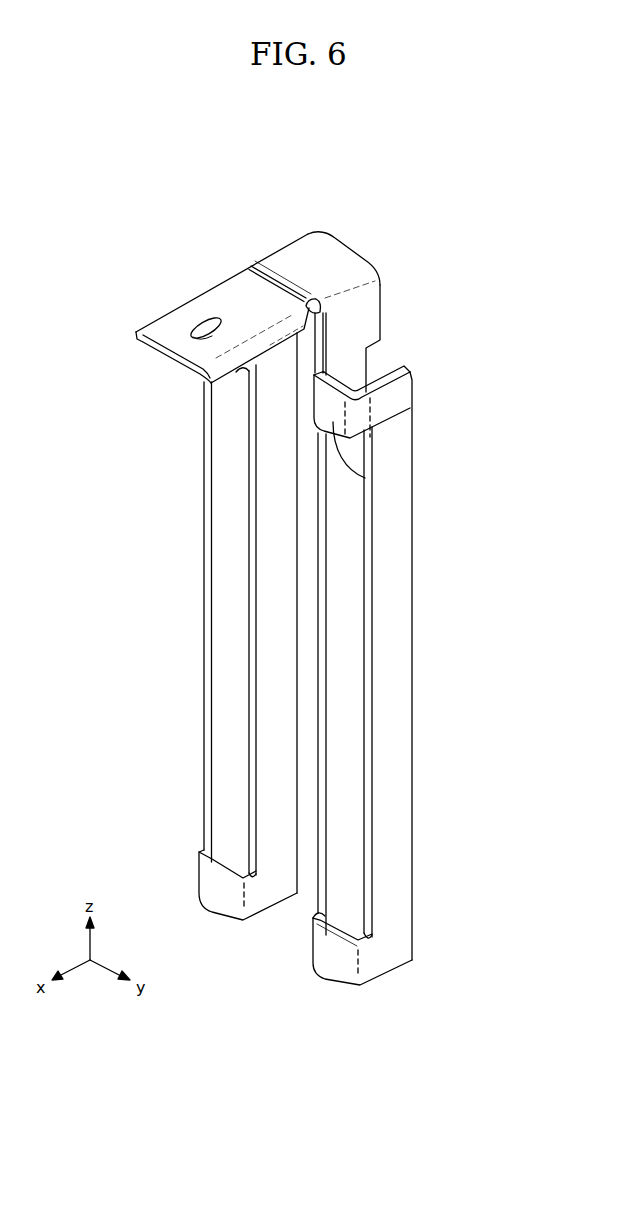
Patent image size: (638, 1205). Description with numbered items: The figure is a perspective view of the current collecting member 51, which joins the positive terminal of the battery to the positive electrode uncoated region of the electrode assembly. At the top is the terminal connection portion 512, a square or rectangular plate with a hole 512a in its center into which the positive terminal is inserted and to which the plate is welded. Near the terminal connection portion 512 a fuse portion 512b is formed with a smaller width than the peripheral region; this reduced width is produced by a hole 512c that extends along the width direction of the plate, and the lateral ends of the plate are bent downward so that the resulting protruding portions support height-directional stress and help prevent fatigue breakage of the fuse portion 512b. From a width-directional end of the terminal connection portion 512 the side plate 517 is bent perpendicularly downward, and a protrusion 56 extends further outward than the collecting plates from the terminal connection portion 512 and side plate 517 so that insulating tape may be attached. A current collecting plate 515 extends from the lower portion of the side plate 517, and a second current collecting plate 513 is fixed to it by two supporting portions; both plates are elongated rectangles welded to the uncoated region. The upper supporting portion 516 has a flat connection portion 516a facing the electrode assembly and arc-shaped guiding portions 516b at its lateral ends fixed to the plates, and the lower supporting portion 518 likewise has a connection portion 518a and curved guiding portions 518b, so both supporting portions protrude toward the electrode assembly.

The current collecting member 51 is at (345, 241).
The terminal connection portion 512 is at (235, 292).
The hole 512a is at (197, 325).
The fuse portion 512b is at (330, 296).
The hole 512c is at (273, 276).
The protrusion 56 is at (375, 279).
The side plate 517 is at (357, 325).
The supporting portion 516 is at (318, 404).
The connection portion 516a is at (365, 478).
The guiding portion 516b is at (360, 423).
The current collecting plate 513 is at (395, 752).
The current collecting plate 515 is at (343, 678).
The supporting portion 518 is at (325, 950).
The connection portion 518a is at (338, 963).
The guiding portion 518b is at (360, 965).